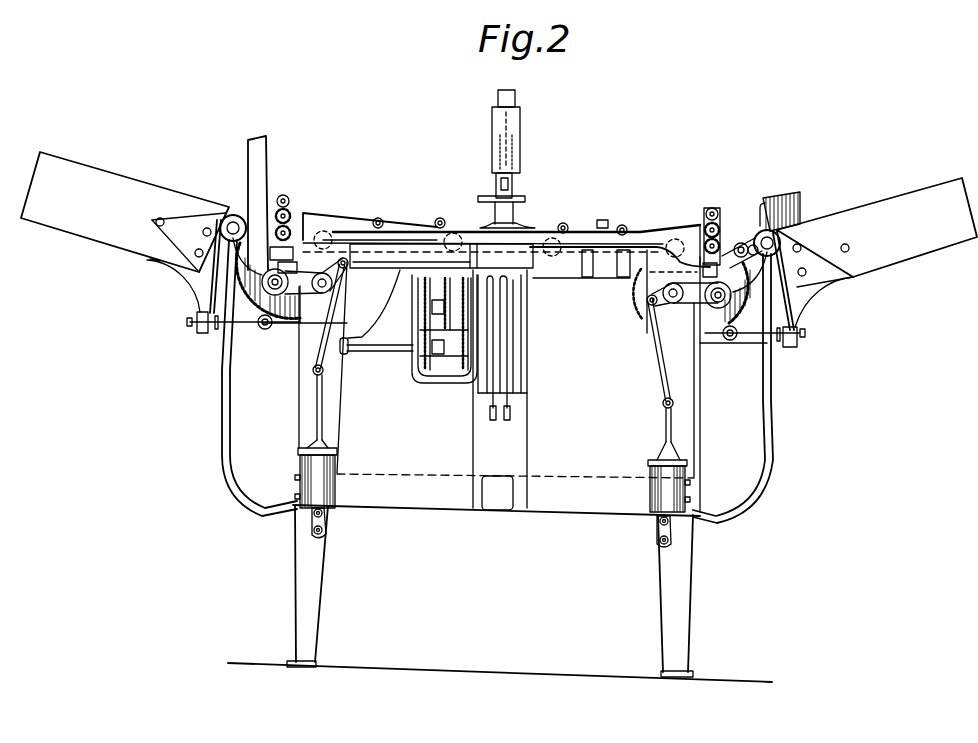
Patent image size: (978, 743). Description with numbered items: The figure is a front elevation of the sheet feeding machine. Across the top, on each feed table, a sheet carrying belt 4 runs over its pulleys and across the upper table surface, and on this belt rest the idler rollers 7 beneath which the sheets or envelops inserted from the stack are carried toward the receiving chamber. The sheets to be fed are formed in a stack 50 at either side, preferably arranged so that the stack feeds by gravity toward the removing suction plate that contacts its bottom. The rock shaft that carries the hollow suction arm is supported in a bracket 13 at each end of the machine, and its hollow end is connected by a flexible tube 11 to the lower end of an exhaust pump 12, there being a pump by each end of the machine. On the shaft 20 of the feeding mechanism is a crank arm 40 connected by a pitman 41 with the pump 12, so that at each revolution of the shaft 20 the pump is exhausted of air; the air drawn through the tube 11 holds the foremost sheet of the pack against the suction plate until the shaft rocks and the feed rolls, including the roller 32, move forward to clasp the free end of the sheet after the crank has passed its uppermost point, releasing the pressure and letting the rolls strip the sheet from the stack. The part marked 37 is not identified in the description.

The sheet carrying belt 4 is at (656, 230).
The idler rollers 7 is at (618, 224).
The flexible tube 11 is at (222, 344).
The exhaust pump 12 is at (322, 478).
The bracket 13 is at (280, 328).
The shaft 20 is at (663, 293).
The roller 32 is at (713, 208).
The rail end plate 37 is at (308, 218).
The crank arm 40 is at (660, 310).
The pitman 41 is at (323, 387).
The stack 50 is at (792, 200).